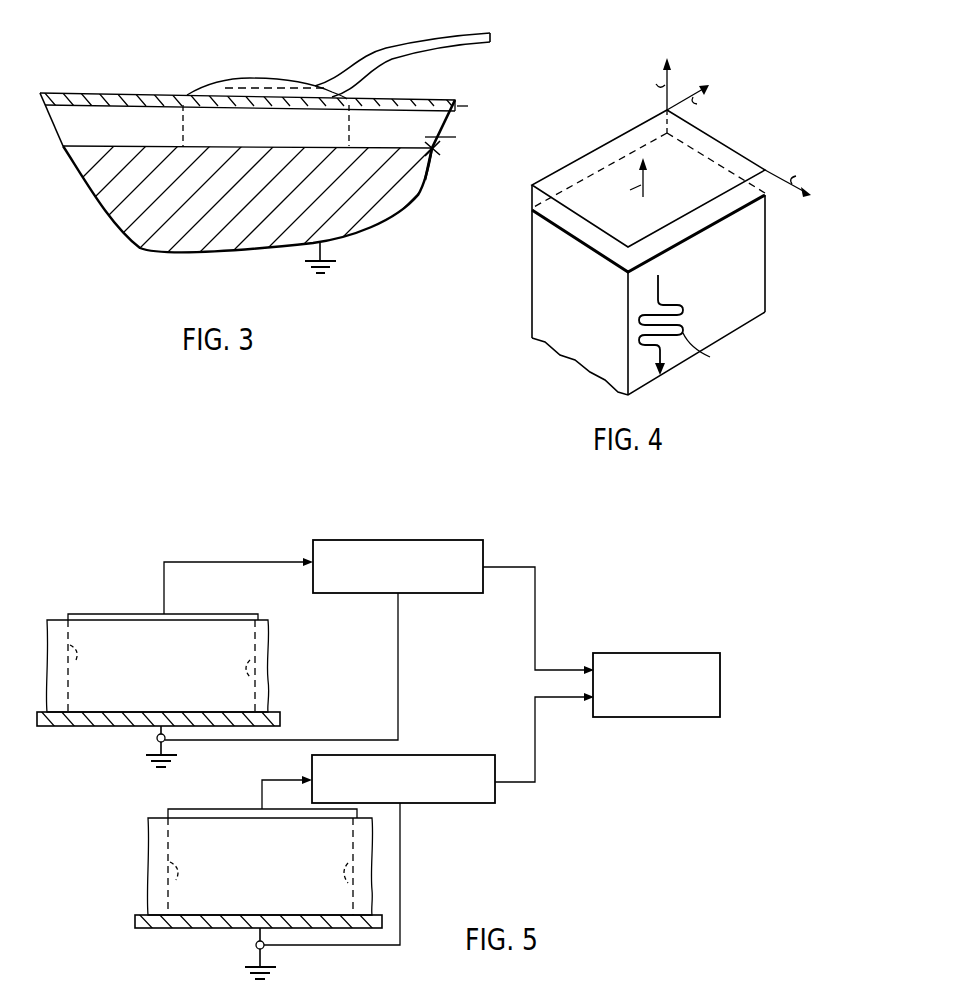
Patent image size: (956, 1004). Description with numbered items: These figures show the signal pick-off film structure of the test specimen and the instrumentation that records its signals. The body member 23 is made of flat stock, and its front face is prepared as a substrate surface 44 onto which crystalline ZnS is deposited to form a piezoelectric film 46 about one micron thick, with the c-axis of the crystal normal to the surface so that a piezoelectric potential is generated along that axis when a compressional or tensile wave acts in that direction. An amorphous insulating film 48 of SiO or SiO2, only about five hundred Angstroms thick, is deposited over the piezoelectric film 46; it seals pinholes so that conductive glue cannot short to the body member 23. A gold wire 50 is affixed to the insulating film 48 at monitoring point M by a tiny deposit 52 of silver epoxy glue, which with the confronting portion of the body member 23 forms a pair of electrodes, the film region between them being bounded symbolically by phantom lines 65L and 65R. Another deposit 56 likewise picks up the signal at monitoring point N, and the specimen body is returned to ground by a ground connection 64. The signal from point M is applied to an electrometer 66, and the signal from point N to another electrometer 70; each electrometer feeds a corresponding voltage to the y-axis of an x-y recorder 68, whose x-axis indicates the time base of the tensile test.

In FIG. 4, the body member 23 is at (765, 232).
In FIG. 5, the body member 23 is at (100, 721).
In FIG. 3, the substrate surface 44 is at (104, 143).
In FIG. 4, the substrate surface 44 is at (722, 160).
In FIG. 3, the piezoelectric film 46 is at (268, 205).
In FIG. 4, the piezoelectric film 46 is at (532, 204).
In FIG. 5, the piezoelectric film 46 is at (227, 626).
In FIG. 3, the insulating film 48 is at (408, 100).
In FIG. 3, the gold wire 50 is at (441, 30).
In FIG. 3, the silver epoxy glue deposit 52 is at (210, 90).
In FIG. 5, the silver epoxy glue deposit 52 is at (178, 614).
In FIG. 5, the silver epoxy glue deposit 56 is at (228, 809).
In FIG. 3, the ground connection 64 is at (328, 258).
In FIG. 5, the ground connection 64 is at (145, 755).
In FIG. 3, the phantom line 65L is at (186, 136).
In FIG. 5, the phantom line 65L is at (66, 665).
In FIG. 3, the phantom line 65R is at (349, 131).
In FIG. 5, the phantom line 65R is at (256, 676).
In FIG. 5, the electrometer 66 is at (463, 540).
In FIG. 5, the x-y recorder 68 is at (677, 653).
In FIG. 5, the electrometer 70 is at (462, 755).